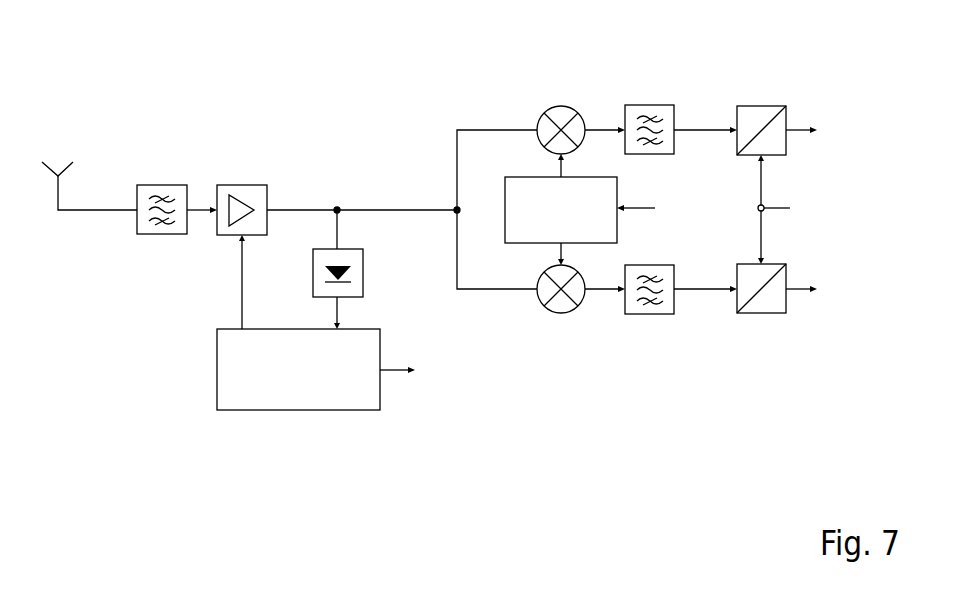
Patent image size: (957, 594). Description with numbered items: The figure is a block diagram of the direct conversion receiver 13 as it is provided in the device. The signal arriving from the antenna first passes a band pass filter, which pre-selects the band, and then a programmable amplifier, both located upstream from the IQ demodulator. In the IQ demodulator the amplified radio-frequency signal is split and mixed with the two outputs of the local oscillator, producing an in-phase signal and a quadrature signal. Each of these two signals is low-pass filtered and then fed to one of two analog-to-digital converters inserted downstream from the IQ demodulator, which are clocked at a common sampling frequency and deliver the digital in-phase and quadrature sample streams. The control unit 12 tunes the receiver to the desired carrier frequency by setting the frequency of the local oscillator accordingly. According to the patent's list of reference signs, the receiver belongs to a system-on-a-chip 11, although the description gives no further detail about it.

The direct conversion receiver 13 is at (428, 48).
The control unit 12 is at (298, 369).
The system-on-a-chip 11 is at (89, 186).